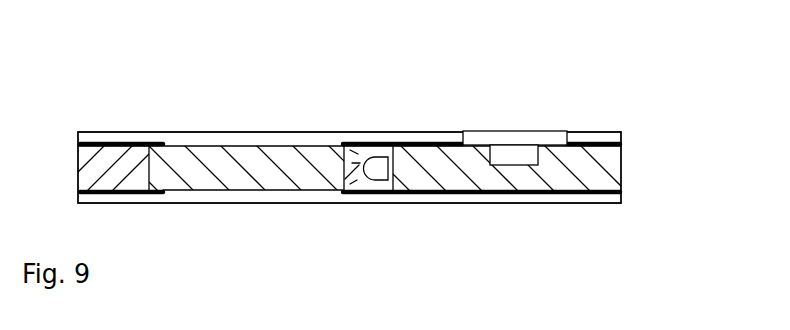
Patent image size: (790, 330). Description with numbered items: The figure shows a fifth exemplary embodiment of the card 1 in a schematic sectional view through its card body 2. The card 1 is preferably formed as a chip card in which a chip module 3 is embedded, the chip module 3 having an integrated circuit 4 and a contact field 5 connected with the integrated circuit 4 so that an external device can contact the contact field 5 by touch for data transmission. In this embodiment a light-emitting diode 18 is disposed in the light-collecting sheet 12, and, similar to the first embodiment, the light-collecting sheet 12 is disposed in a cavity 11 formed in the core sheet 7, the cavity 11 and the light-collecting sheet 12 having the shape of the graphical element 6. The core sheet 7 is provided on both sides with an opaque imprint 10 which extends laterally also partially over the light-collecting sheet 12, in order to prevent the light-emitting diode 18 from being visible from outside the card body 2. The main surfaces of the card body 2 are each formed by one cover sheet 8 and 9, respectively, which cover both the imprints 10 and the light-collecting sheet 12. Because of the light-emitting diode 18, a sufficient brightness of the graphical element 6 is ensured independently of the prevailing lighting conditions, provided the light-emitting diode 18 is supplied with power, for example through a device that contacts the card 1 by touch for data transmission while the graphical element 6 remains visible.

The card 1 is at (430, 118).
The card body 2 is at (619, 128).
The chip module 3 is at (557, 118).
The integrated circuit 4 is at (513, 155).
The contact field 5 is at (483, 130).
The graphical element 6 is at (238, 140).
The core sheet 7 is at (625, 163).
The first cover sheet 8 is at (625, 135).
The second cover sheet 9 is at (625, 198).
The imprint 10 is at (103, 140).
The cavity 11 is at (87, 188).
The light-collecting sheet 12 is at (287, 163).
The light-emitting diode 18 is at (383, 145).